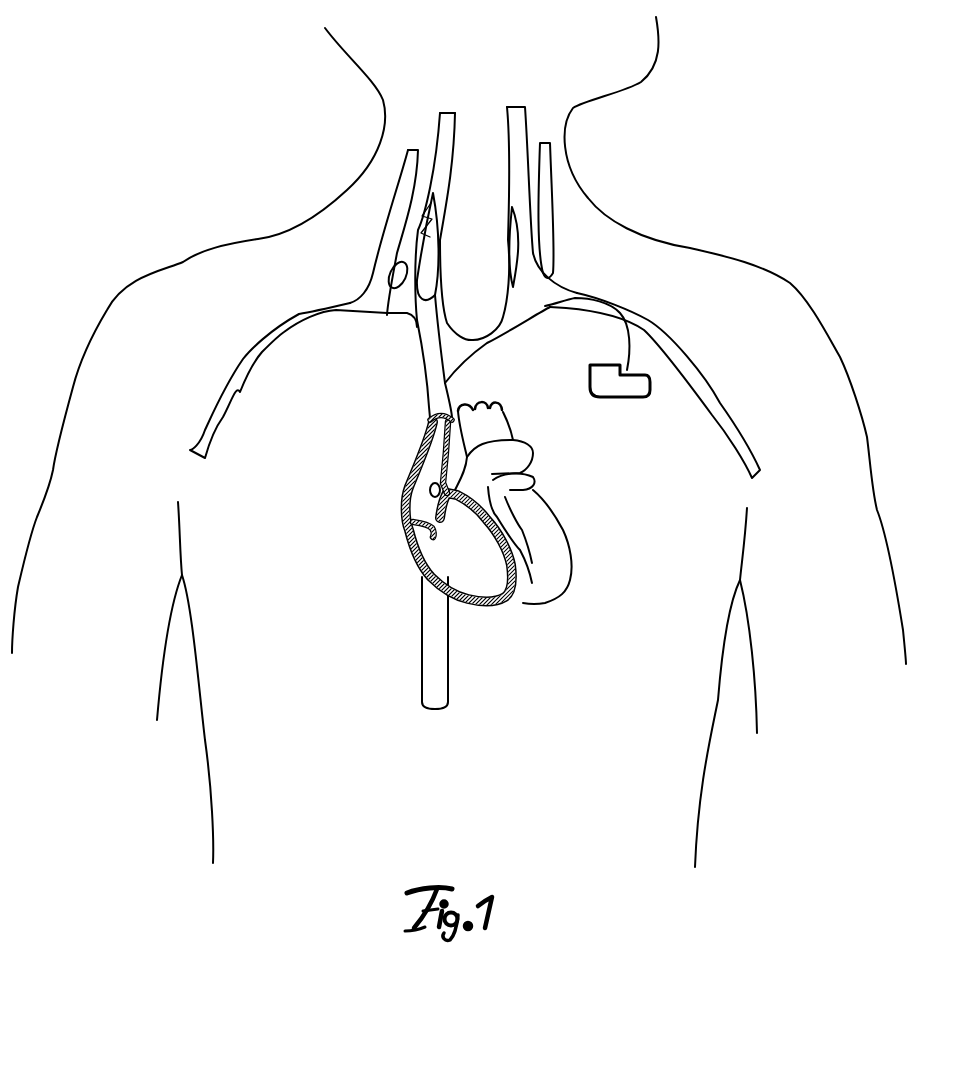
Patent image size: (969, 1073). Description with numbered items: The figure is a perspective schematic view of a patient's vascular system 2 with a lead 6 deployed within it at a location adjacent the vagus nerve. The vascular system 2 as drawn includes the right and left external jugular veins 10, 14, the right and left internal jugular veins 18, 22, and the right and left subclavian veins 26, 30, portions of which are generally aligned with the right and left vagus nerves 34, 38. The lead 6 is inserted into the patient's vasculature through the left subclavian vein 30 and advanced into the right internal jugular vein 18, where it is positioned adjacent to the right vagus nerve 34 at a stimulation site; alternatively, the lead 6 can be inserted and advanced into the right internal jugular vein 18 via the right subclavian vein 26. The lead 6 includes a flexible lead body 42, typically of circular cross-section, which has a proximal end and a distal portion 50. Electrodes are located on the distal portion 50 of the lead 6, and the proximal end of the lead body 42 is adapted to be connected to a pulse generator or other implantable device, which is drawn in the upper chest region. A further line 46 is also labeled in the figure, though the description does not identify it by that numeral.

The vascular system 2 is at (744, 173).
The lead 6 is at (470, 355).
The right external jugular vein 10 is at (407, 200).
The left external jugular vein 14 is at (557, 222).
The right internal jugular vein 18 is at (447, 132).
The left internal jugular vein 22 is at (517, 133).
The right subclavian vein 26 is at (299, 321).
The left subclavian vein 30 is at (625, 310).
The right vagus nerve 34 is at (440, 237).
The left vagus nerve 38 is at (512, 253).
The lead body 42 is at (537, 312).
The cephalic vein 46 is at (578, 290).
The distal portion 50 is at (395, 290).